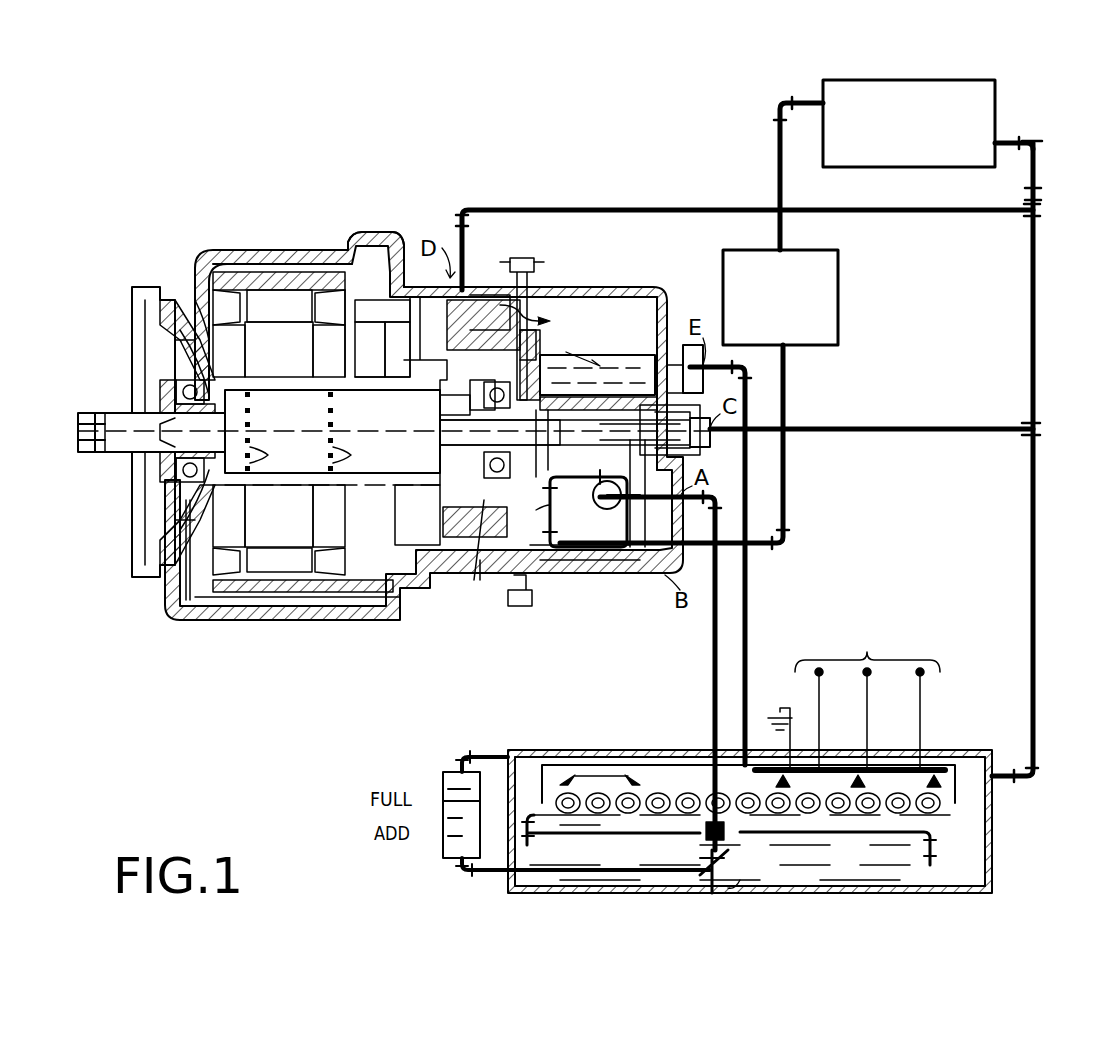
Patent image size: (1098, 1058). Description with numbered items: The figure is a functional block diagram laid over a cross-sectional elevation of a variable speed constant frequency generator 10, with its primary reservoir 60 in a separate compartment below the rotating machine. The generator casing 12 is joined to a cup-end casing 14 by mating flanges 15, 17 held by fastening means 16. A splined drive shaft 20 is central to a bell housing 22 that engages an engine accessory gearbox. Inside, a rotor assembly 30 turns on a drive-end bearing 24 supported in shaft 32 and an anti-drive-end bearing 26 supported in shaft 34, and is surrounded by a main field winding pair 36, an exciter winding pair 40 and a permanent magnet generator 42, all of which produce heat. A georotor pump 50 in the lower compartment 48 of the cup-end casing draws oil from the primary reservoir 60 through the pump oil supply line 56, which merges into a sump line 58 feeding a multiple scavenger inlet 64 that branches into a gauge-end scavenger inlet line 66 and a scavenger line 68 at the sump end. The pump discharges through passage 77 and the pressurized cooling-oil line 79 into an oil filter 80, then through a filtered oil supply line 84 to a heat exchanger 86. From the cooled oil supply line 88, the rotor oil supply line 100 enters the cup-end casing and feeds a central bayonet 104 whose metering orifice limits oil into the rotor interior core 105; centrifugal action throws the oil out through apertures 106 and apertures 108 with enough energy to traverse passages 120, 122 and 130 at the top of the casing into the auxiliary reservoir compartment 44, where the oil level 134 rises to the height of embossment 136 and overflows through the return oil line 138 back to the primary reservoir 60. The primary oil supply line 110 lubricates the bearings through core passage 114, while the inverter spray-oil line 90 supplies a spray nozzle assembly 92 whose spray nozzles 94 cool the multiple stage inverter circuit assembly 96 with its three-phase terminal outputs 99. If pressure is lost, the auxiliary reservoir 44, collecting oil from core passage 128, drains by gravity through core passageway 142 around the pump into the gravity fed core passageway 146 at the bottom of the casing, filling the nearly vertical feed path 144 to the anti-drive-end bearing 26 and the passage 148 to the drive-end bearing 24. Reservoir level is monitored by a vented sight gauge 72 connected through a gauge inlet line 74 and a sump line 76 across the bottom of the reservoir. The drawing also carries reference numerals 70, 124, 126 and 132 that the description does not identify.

The constant frequency generator 10 is at (279, 228).
The generator casing 12 is at (208, 250).
The cup-end casing 14 is at (625, 290).
The mating flange 15 is at (502, 278).
The fastening means 16 is at (522, 258).
The cup flange 17 is at (536, 280).
The splined drive shaft 20 is at (108, 413).
The bell housing 22 is at (128, 552).
The drive-end bearing 24 is at (168, 470).
The anti-drive-end bearing 26 is at (512, 470).
The rotor assembly 30 is at (294, 423).
The shaft 32 is at (125, 447).
The shaft 34 is at (484, 441).
The main field winding pair 36 is at (291, 358).
The exciter winding pair 40 is at (399, 338).
The permanent magnet generator 42 is at (386, 418).
The auxiliary reservoir compartment 44 is at (584, 330).
The lower compartment 48 is at (606, 536).
The georotor pump 50 is at (597, 483).
The pump oil supply line 56 is at (712, 668).
The sump line 58 is at (742, 888).
The primary reservoir 60 is at (1044, 861).
The multiple scavenger inlet 64 is at (706, 838).
The gauge-end scavenger inlet line 66 is at (660, 840).
The scavenger line 68 is at (850, 840).
The sump wall 70 is at (995, 797).
The vented sight gauge 72 is at (440, 770).
The gauge inlet line 74 is at (485, 882).
The sump line 76 is at (702, 885).
The passage 77 is at (532, 524).
The pressurized cooling-oil line 79 is at (788, 482).
The oil filter 80 is at (840, 300).
The filtered oil supply line 84 is at (777, 178).
The heat exchanger 86 is at (998, 108).
The cooled oil supply line 88 is at (1036, 172).
The inverter spray-oil line 90 is at (1031, 530).
The spray nozzle assembly 92 is at (965, 760).
The spray nozzles 94 is at (615, 775).
The multiple stage inverter circuit assembly 96 is at (690, 770).
The terminal outputs 99 is at (822, 715).
The rotor oil supply line 100 is at (986, 425).
The central bayonet 104 is at (489, 404).
The rotor interior core 105 is at (438, 412).
The apertures 106 is at (361, 456).
The apertures 108 is at (278, 456).
The primary oil supply line 110 is at (595, 196).
The core passage 114 is at (302, 492).
The core passage 120 is at (196, 305).
The passage 122 is at (310, 250).
The oil passage 124 is at (408, 262).
The oil passage 126 is at (425, 290).
The core passage 128 is at (350, 262).
The core passage 130 is at (378, 234).
The oil passage 132 is at (530, 305).
The oil level 134 is at (620, 360).
The embossment 136 is at (692, 345).
The return oil line 138 is at (739, 563).
The core passageway 142 is at (598, 570).
The nearly vertical feed path 144 is at (490, 585).
The gravity fed core passageway 146 is at (385, 620).
The passage 148 is at (175, 590).